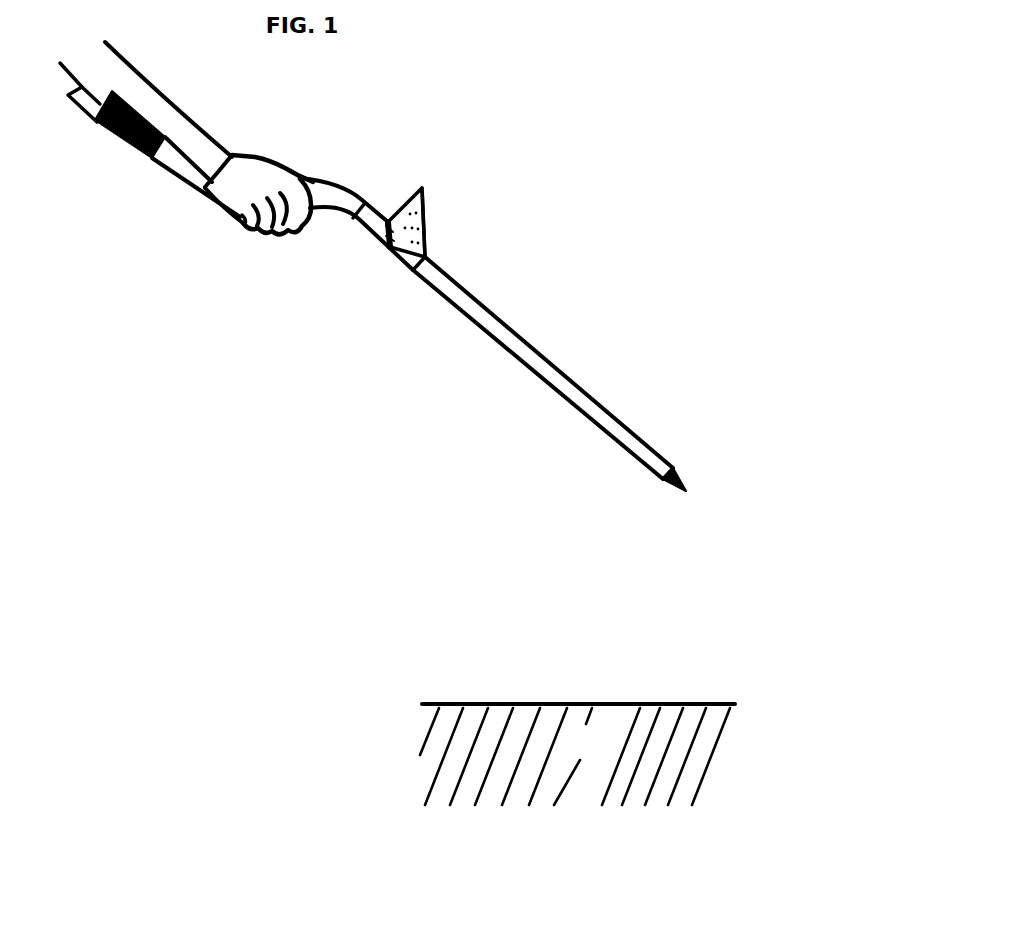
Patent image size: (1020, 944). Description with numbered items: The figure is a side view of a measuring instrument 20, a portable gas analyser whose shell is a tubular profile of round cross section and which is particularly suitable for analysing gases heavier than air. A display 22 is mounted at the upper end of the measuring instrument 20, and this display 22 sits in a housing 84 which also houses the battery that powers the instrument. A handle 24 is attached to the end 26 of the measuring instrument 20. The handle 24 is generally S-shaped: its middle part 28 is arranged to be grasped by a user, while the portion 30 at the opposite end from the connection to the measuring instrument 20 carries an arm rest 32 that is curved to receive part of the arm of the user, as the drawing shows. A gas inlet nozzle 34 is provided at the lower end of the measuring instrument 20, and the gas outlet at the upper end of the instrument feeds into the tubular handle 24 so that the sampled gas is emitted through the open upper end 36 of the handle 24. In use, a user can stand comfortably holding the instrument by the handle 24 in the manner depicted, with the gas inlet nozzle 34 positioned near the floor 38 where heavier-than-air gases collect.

The measuring instrument 20 is at (647, 430).
The display 22 is at (430, 235).
The handle 24 is at (325, 178).
The end 26 is at (372, 198).
The middle part 28 is at (226, 218).
The portion 30 is at (163, 180).
The arm rest 32 is at (118, 140).
The gas inlet nozzle 34 is at (688, 490).
The open upper end 36 is at (78, 90).
The floor 38 is at (620, 710).
The housing 84 is at (427, 208).